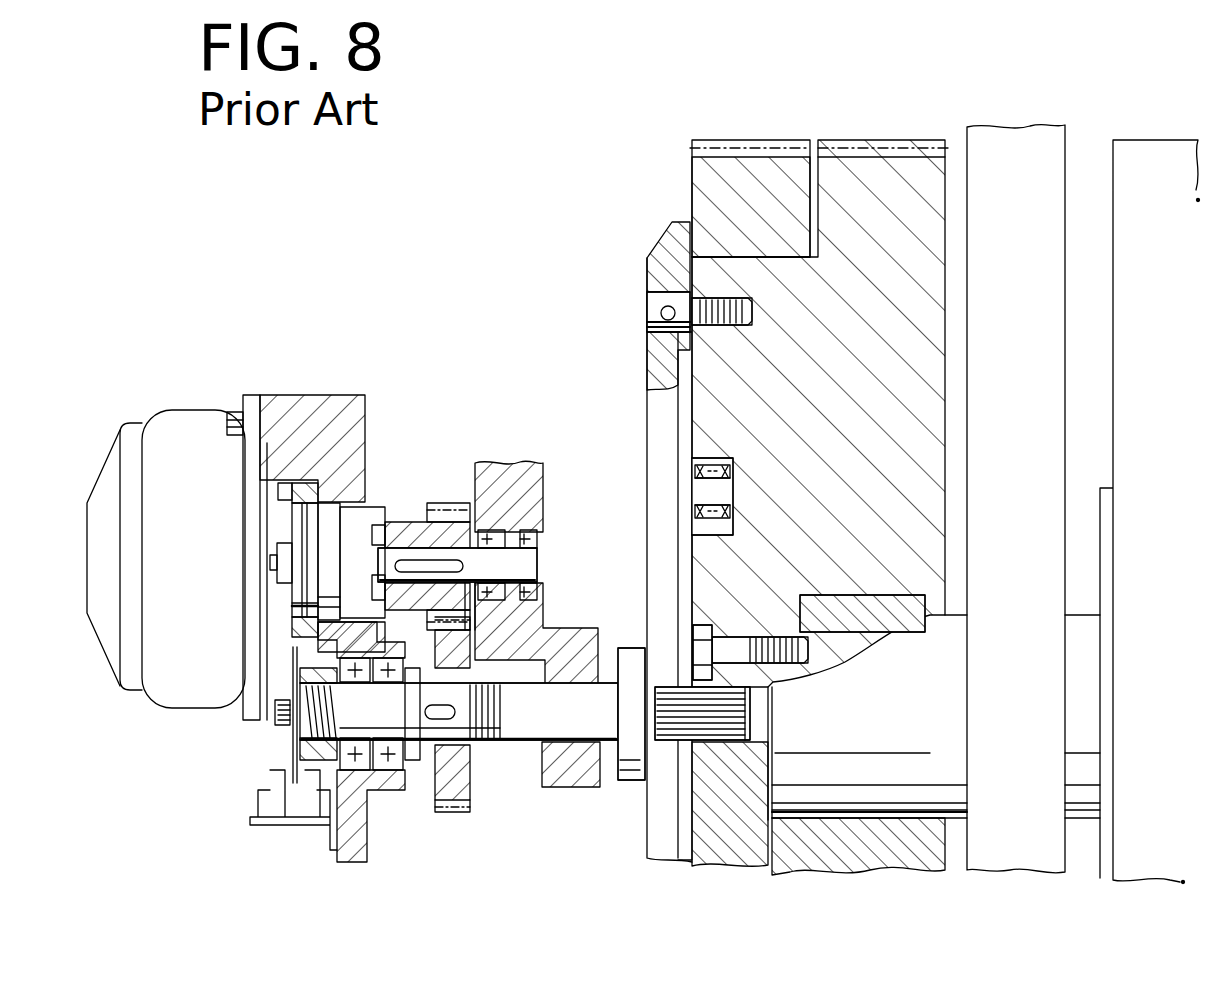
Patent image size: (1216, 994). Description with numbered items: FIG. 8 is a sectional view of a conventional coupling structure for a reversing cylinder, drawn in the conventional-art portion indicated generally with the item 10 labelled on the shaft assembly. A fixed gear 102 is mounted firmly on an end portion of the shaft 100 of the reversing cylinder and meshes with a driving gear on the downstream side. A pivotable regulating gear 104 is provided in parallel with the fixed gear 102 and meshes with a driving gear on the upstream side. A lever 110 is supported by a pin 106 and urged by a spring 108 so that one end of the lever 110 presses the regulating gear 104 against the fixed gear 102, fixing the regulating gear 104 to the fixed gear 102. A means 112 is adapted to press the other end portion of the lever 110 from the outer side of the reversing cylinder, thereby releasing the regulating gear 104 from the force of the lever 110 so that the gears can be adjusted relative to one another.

The main shaft 10 is at (575, 713).
The shaft 100 is at (935, 756).
The fixed gear 102 is at (860, 180).
The regulating gear 104 is at (750, 185).
The pin 106 is at (648, 313).
The spring 108 is at (690, 460).
The lever 110 is at (663, 508).
The pressing means 112 is at (298, 388).